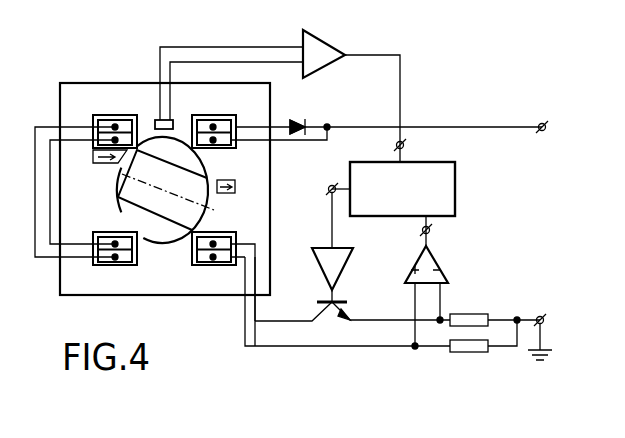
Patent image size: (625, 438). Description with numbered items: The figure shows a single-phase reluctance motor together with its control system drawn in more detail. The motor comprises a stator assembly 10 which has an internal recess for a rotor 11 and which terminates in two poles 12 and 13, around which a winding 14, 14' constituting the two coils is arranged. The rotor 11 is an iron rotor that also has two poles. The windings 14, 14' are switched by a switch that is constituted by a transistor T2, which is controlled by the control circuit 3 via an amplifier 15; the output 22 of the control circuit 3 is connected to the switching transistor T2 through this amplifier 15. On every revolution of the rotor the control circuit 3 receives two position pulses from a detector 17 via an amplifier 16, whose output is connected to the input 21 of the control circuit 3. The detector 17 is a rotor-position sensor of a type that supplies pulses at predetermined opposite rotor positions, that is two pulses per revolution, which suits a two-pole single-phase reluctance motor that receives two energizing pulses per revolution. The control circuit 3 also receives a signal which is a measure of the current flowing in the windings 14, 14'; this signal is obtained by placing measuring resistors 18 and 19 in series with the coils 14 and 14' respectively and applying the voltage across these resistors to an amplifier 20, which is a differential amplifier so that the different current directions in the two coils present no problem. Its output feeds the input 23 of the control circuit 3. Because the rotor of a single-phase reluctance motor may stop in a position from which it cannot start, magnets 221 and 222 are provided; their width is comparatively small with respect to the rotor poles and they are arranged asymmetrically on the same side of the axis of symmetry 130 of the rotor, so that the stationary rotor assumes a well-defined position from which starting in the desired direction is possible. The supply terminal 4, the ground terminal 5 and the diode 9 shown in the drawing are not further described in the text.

The control circuit 3 is at (457, 190).
The supply voltage terminal 4 is at (543, 132).
The ground terminal 5 is at (539, 316).
The diode 9 is at (386, 118).
The stator assembly 10 is at (110, 92).
The rotor 11 is at (151, 190).
The pole 12 is at (148, 125).
The pole 13 is at (143, 248).
The winding 14 is at (164, 191).
The winding 14' is at (164, 194).
The amplifier 15 is at (341, 263).
The amplifier 16 is at (325, 44).
The detector 17 is at (173, 126).
The measuring resistor 18 is at (477, 314).
The measuring resistor 19 is at (478, 352).
The amplifier 20 is at (446, 264).
The input 21 is at (405, 145).
The output 22 is at (330, 186).
The input 23 is at (432, 231).
The axis of symmetry 130 is at (110, 210).
The magnet 221 is at (103, 162).
The magnet 222 is at (237, 187).
The transistor T2 is at (347, 284).